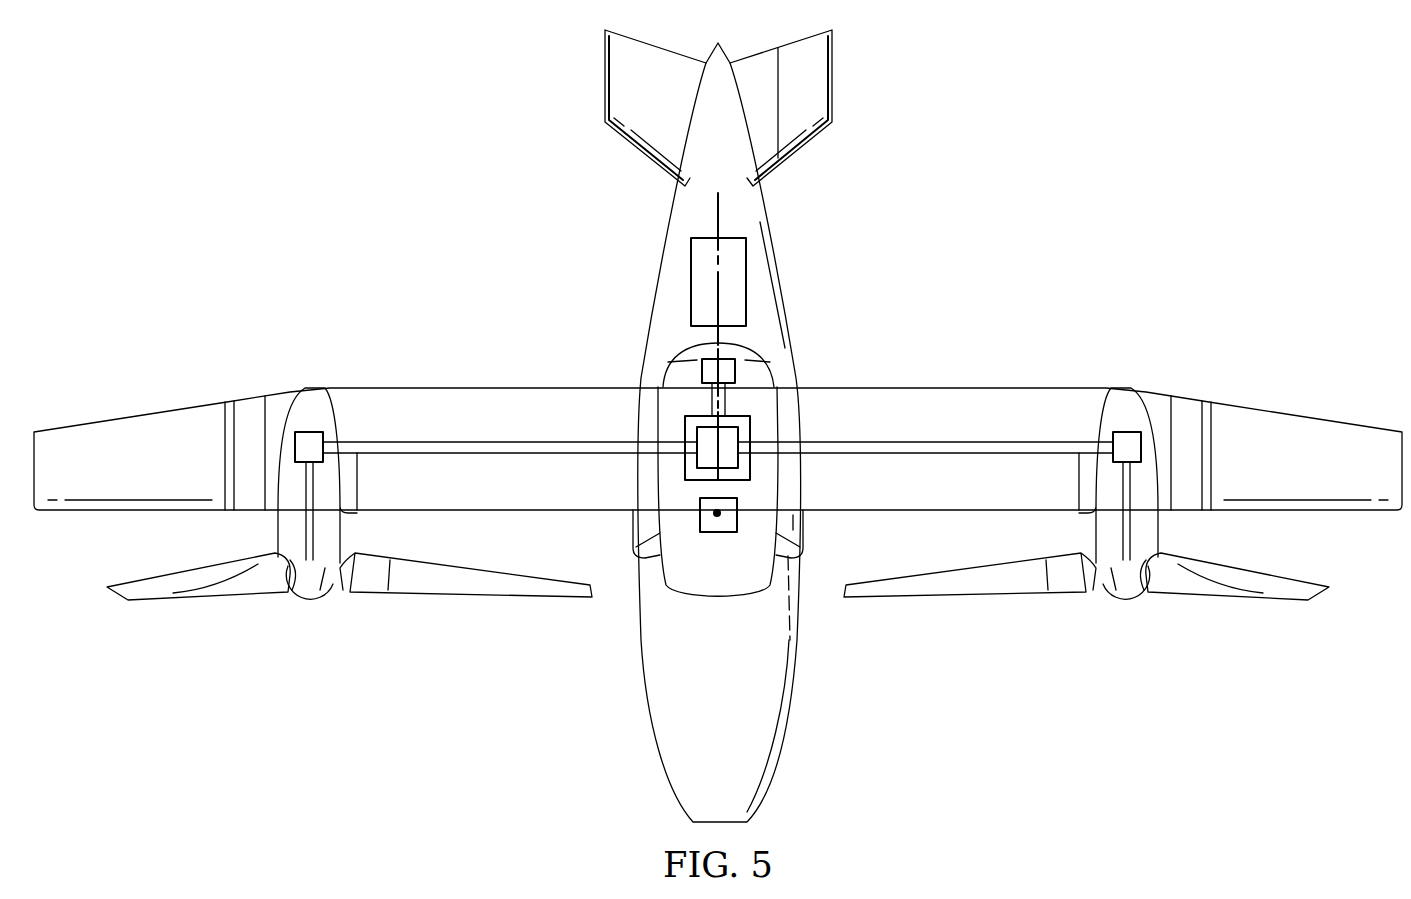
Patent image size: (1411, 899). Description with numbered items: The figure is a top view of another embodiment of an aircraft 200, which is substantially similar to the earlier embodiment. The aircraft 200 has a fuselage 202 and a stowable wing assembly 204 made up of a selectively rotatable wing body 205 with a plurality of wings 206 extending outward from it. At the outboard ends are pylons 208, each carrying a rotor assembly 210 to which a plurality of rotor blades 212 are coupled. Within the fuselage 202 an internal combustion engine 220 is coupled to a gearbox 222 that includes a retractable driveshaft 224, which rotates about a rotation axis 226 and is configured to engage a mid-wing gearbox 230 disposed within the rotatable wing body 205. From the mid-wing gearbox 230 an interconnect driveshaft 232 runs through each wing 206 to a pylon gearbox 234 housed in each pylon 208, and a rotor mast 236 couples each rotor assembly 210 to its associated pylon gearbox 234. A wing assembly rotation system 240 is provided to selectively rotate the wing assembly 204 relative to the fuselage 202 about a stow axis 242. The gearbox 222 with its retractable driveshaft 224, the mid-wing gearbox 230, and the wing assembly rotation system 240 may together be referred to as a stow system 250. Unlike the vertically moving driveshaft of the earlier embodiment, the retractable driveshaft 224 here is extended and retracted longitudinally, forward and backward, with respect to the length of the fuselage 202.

The aircraft 200 is at (1044, 80).
The fuselage 202 is at (642, 693).
The stowable wing assembly 204 is at (428, 383).
The selectively rotatable wing body 205 is at (660, 520).
The wing 206 is at (549, 387).
The pylon 208 is at (278, 525).
The rotor assembly 210 is at (304, 610).
The rotor blade 212 is at (148, 580).
The internal combustion engine 220 is at (750, 270).
The gearbox 222 is at (736, 373).
The retractable driveshaft 224 is at (711, 400).
The rotation axis 226 is at (722, 215).
The mid-wing gearbox 230 is at (745, 465).
The interconnect driveshaft 232 is at (500, 455).
The pylon gearbox 234 is at (309, 432).
The rotor mast 236 is at (318, 540).
The wing assembly rotation system 240 is at (710, 535).
The stow axis 242 is at (717, 516).
The stow system 250 is at (760, 422).